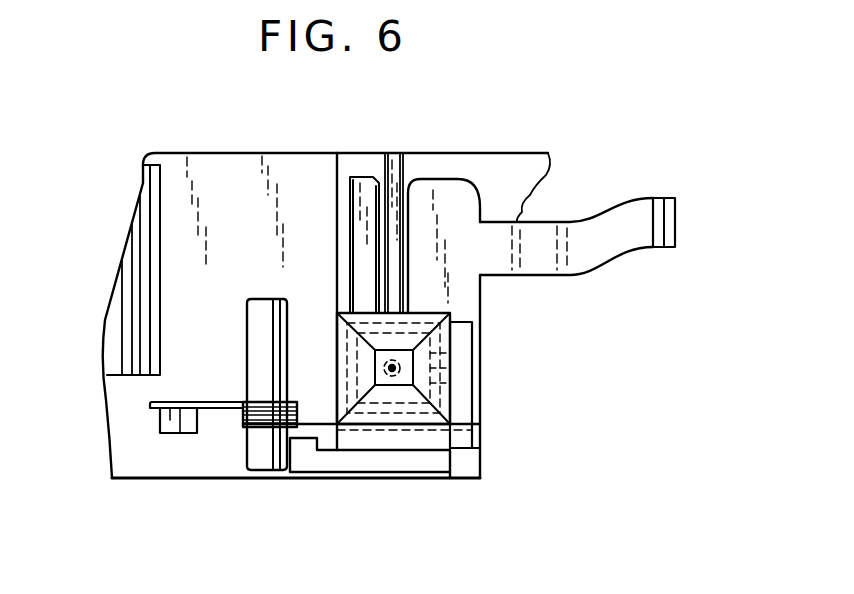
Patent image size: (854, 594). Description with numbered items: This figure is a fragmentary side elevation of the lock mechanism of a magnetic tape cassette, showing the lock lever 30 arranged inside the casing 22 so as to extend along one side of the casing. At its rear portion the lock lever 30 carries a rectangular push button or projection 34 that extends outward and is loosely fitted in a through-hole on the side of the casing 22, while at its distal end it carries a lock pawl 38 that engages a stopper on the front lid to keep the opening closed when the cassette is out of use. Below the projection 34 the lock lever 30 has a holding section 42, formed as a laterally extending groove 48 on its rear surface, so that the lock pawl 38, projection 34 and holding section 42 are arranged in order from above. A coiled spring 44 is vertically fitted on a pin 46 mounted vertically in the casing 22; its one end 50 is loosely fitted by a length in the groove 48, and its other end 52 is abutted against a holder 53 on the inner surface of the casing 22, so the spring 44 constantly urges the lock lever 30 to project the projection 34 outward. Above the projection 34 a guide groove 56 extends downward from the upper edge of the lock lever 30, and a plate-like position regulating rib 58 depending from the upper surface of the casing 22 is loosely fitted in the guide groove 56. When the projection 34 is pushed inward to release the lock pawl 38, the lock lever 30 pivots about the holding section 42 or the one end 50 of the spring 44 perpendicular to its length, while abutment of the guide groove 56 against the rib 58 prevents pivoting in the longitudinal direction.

The casing 22 is at (255, 160).
The lock lever 30 is at (476, 300).
The projection 34 is at (392, 393).
The lock pawl 38 is at (677, 222).
The holding section 42 is at (421, 388).
The spring 44 is at (243, 417).
The pin 46 is at (248, 318).
The groove 48 is at (472, 440).
The one end of the spring 50 is at (428, 385).
The other end of the spring 52 is at (187, 401).
The holder 53 is at (158, 434).
The guide groove 56 is at (408, 178).
The position regulating rib 58 is at (380, 165).